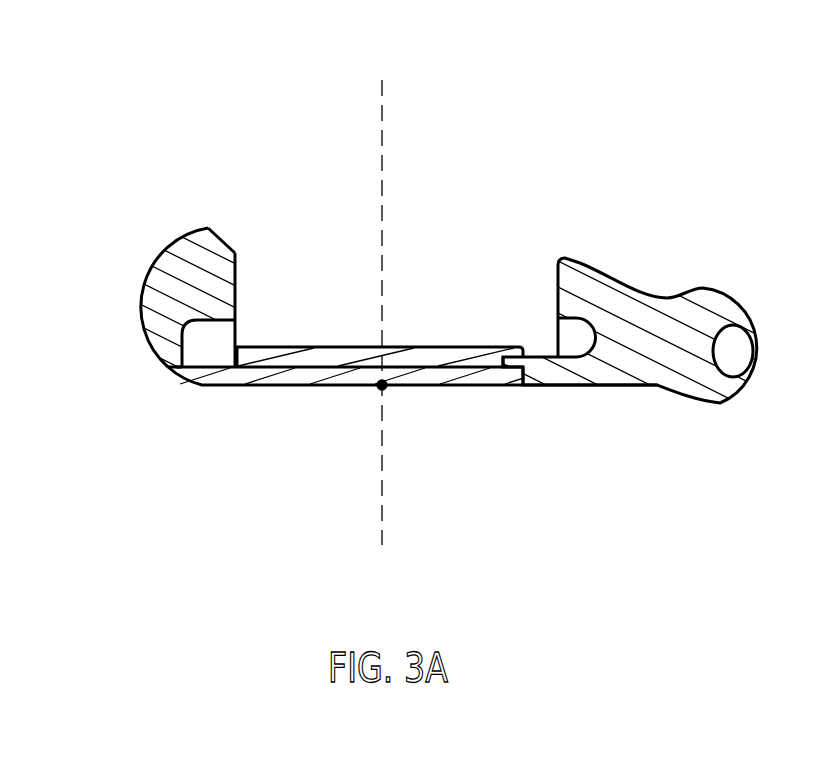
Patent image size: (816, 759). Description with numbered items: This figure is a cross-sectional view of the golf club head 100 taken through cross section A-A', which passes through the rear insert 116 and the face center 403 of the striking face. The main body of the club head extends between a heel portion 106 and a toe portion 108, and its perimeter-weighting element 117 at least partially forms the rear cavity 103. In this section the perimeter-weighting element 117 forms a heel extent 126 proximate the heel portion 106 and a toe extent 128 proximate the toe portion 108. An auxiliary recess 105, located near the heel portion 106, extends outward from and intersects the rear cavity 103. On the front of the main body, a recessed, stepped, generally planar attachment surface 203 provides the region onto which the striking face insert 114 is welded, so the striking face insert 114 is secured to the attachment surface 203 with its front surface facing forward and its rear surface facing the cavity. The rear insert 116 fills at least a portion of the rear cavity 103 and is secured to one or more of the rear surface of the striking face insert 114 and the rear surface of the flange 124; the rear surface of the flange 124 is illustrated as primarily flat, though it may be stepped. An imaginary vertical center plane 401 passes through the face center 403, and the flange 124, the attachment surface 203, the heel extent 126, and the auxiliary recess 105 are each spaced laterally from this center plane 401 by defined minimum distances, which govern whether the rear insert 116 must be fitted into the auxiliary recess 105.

The golf club head 100 is at (543, 113).
The vertical center plane 401 is at (378, 112).
The rear cavity 103 is at (323, 230).
The toe portion 108 is at (132, 290).
The toe extent 128 is at (173, 262).
The perimeter-weighting element 117 is at (210, 230).
The auxiliary recess 105 is at (241, 327).
The heel portion 106 is at (720, 273).
The heel extent 126 is at (620, 290).
The flange 124 is at (508, 365).
The rear insert 116 is at (433, 345).
The striking face insert 114 is at (283, 375).
The attachment surface 203 is at (183, 378).
The face center 403 is at (384, 387).